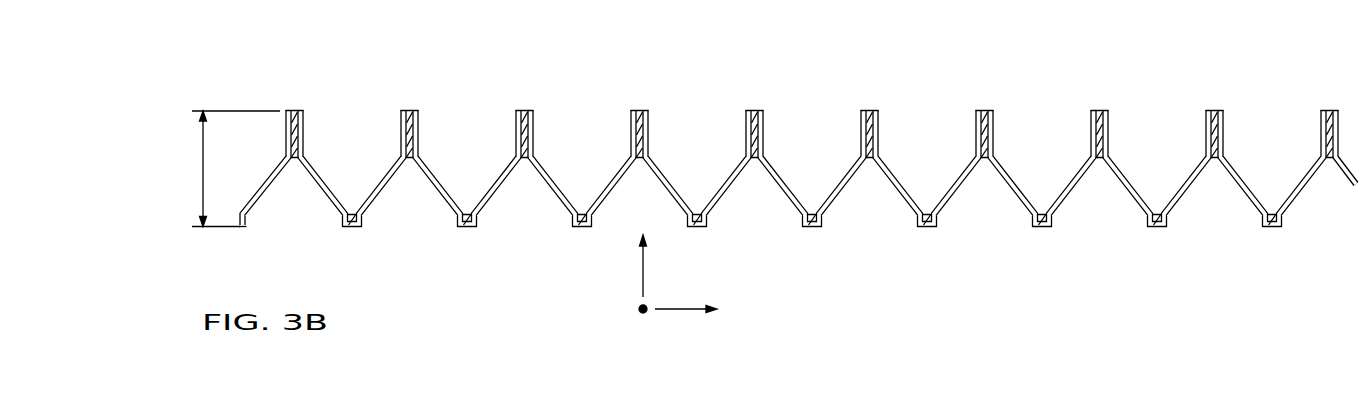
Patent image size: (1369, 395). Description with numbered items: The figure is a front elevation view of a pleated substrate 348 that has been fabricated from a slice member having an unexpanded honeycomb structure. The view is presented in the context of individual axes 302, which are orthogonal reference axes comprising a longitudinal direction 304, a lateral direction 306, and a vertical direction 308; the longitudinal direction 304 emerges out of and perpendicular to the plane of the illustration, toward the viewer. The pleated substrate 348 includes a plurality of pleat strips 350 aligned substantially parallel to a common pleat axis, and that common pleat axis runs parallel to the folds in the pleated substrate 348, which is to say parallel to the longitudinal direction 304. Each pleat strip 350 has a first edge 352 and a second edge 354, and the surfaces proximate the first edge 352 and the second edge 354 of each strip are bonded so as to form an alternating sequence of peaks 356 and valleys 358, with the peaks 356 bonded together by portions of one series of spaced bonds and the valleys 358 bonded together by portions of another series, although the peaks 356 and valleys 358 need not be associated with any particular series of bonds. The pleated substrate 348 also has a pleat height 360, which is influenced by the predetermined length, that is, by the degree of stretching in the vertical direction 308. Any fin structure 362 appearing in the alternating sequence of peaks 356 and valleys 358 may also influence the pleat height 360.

The pleated substrate 348 is at (600, 69).
The pleat strip 350 is at (318, 172).
The first edge 352 is at (293, 109).
The second edge 354 is at (350, 228).
The peak 356 is at (755, 109).
The valley 358 is at (808, 228).
The pleat height 360 is at (202, 167).
The fin structure 362 is at (535, 128).
The individual axes 302 is at (604, 286).
The longitudinal direction 304 is at (636, 310).
The lateral direction 306 is at (642, 270).
The vertical direction 308 is at (680, 308).